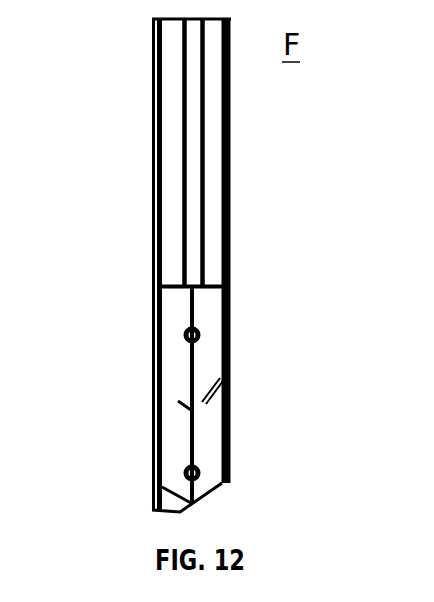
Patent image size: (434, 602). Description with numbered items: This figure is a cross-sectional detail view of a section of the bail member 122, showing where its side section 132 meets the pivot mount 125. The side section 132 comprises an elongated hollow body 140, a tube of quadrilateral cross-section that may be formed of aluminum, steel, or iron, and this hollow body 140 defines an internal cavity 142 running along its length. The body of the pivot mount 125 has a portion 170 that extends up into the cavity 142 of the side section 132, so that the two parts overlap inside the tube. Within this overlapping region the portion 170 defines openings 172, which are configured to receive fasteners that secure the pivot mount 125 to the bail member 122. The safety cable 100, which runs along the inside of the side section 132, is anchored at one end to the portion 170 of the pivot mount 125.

The bail member 122 is at (182, 270).
The pivot mount 125 is at (185, 408).
The safety cable 100 is at (204, 120).
The side section 132 is at (233, 228).
The hollow body 140 is at (153, 180).
The internal cavity 142 is at (185, 125).
The portion 170 is at (172, 377).
The openings 172 is at (200, 336).